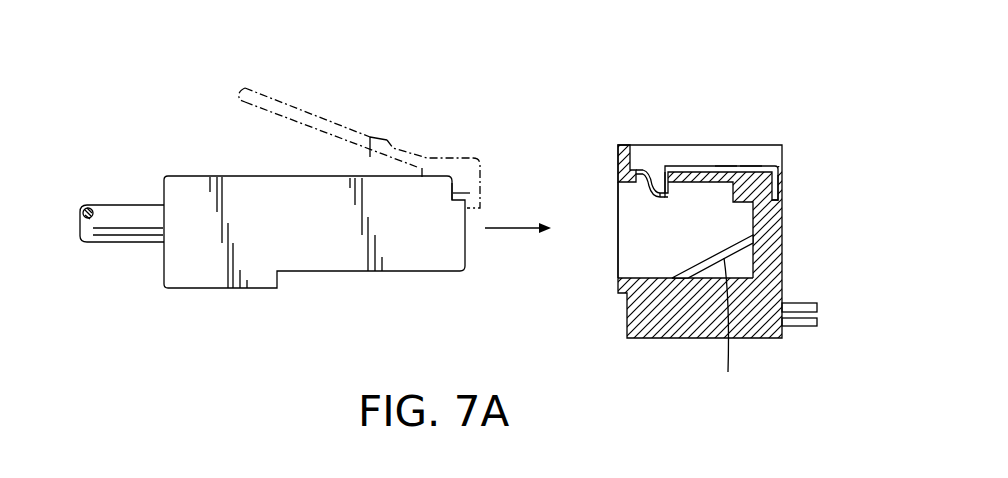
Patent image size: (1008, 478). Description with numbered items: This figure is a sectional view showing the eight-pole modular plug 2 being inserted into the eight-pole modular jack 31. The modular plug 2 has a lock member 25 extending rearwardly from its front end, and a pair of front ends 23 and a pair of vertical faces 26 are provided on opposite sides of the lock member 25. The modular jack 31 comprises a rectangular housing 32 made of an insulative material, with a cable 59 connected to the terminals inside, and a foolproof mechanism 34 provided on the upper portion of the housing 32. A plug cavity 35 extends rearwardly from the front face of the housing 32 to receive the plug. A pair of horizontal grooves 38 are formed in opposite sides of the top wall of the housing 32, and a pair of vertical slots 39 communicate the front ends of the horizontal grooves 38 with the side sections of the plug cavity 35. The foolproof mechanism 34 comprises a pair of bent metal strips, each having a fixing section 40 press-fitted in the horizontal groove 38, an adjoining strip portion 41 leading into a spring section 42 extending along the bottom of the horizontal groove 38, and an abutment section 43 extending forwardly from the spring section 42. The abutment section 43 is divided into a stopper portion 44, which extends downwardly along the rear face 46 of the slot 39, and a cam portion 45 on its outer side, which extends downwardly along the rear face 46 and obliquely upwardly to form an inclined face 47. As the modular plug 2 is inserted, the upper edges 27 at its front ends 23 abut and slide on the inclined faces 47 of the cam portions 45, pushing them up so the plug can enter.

The modular plug 2 is at (213, 148).
The front ends 23 is at (462, 180).
The lock member 25 is at (300, 117).
The vertical faces 26 is at (470, 193).
The upper edges 27 is at (455, 177).
The modular jack 31 is at (604, 308).
The housing 32 is at (660, 338).
The foolproof mechanism 34 is at (703, 158).
The plug cavity 35 is at (640, 246).
The horizontal grooves 38 is at (764, 160).
The vertical slots 39 is at (643, 167).
The fixing section 40 is at (785, 186).
The contact plate portion 41 is at (748, 166).
The spring section 42 is at (727, 166).
The abutment section 43 is at (620, 170).
The stopper portion 44 is at (668, 196).
The cam portion 45 is at (650, 205).
The rear face 46 is at (656, 167).
The inclined face 47 is at (650, 203).
The cable 59 is at (805, 303).